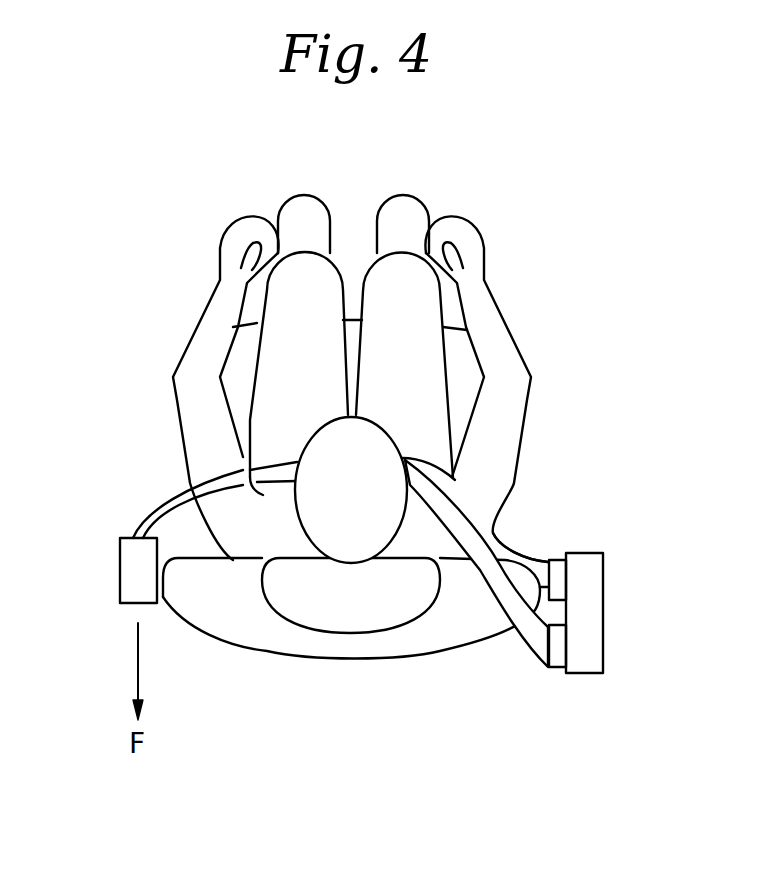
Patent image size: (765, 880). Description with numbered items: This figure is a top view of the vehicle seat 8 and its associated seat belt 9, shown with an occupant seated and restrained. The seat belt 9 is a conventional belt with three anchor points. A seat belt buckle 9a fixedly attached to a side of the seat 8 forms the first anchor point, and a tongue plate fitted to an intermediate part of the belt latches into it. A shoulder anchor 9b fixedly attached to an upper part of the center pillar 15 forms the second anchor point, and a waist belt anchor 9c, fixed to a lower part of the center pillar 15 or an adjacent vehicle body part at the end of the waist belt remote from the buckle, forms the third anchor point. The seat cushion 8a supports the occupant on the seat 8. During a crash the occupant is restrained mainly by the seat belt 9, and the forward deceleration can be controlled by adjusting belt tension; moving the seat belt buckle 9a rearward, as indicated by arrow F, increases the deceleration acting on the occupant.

The seat 8 is at (463, 370).
The seat cushion 8a is at (347, 655).
The seat belt 9 is at (527, 633).
The seat belt buckle 9a is at (120, 562).
The shoulder anchor 9b is at (557, 667).
The waist belt anchor 9c is at (557, 562).
The center pillar 15 is at (597, 643).